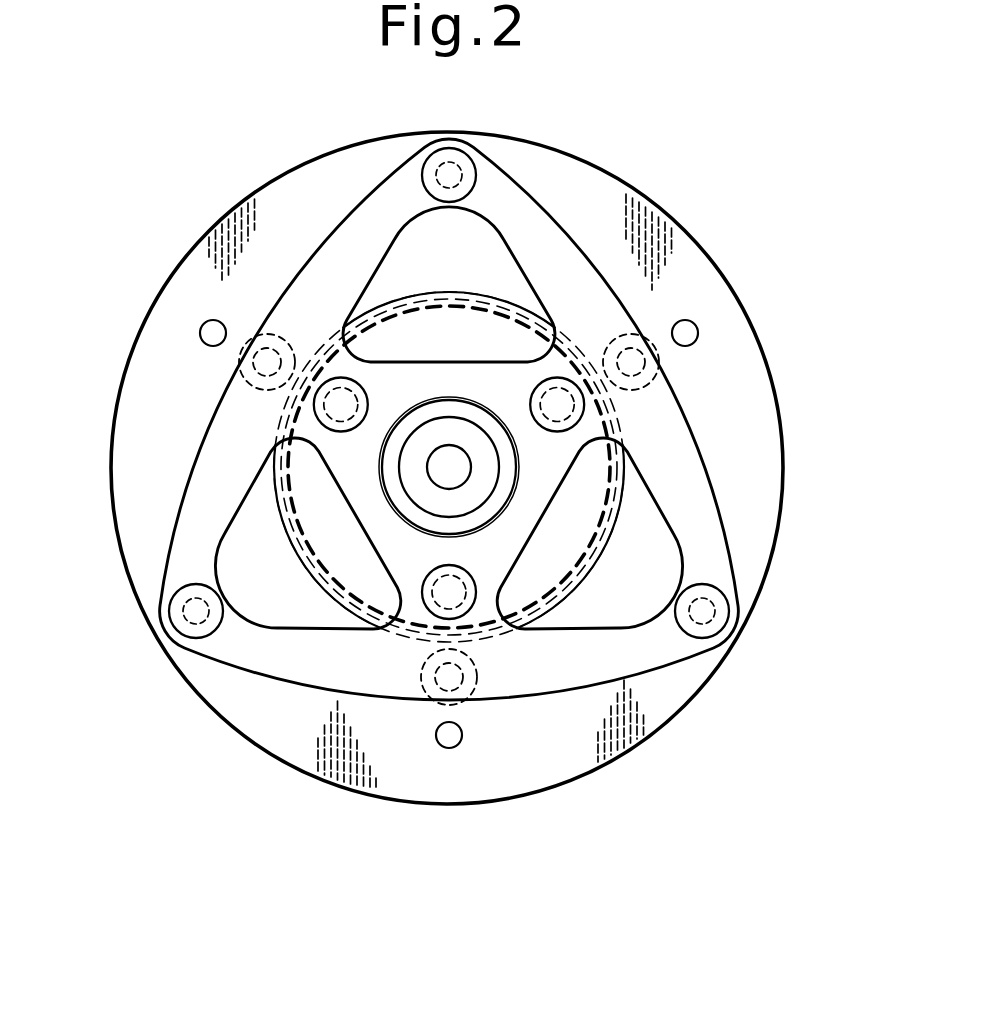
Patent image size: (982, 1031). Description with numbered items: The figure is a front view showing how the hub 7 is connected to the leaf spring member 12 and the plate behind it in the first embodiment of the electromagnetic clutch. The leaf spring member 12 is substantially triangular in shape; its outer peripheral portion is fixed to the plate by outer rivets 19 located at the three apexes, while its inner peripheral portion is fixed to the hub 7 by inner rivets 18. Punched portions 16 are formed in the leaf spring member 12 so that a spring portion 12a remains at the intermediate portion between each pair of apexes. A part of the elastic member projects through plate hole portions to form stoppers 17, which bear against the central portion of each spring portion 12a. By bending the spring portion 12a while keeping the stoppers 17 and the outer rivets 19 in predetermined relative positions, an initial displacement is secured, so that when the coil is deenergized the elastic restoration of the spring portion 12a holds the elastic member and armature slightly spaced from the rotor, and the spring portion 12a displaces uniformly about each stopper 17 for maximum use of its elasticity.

The hub 7 is at (403, 327).
The leaf spring member 12 is at (338, 667).
The spring portion 12a is at (240, 410).
The punched portions 16 is at (510, 277).
The stoppers 17 is at (250, 320).
The inner rivets 18 is at (470, 600).
The outer rivets 19 is at (192, 612).